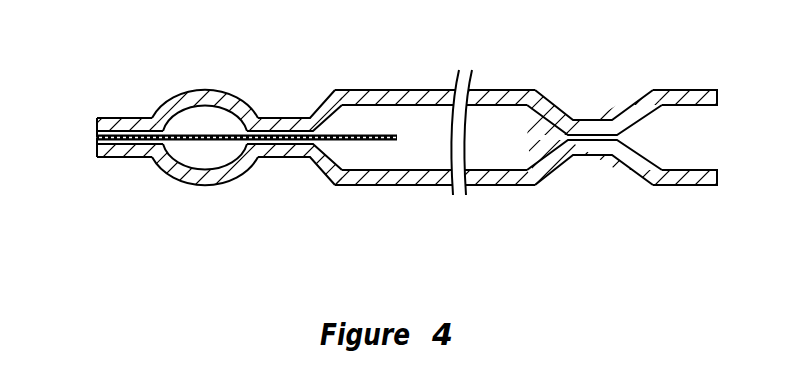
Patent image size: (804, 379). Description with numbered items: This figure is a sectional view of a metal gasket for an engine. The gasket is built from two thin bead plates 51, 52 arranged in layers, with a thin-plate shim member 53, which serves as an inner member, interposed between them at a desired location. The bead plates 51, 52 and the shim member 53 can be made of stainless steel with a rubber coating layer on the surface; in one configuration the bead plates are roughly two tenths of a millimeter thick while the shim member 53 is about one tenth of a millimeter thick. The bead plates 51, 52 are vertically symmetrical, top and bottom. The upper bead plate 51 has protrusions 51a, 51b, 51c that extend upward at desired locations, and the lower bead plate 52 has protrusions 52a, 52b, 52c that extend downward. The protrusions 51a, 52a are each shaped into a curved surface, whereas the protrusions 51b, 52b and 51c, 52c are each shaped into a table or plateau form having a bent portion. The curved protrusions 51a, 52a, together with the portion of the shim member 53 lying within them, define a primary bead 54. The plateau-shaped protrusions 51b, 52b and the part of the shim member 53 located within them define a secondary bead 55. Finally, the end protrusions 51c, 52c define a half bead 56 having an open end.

The bead plate 51 is at (121, 118).
The bead plate 52 is at (121, 157).
The shim member 53 is at (97, 138).
The primary bead 54 is at (402, 140).
The secondary bead 55 is at (517, 72).
The half bead 56 is at (402, 140).
The protrusion 51a is at (187, 92).
The protrusion 52a is at (197, 184).
The protrusion 51b is at (375, 90).
The protrusion 52b is at (356, 185).
The protrusion 51c is at (665, 90).
The protrusion 52c is at (664, 185).